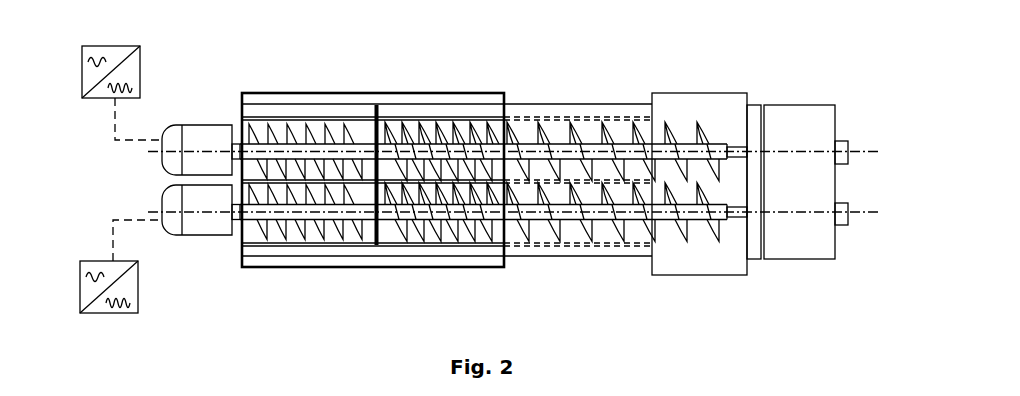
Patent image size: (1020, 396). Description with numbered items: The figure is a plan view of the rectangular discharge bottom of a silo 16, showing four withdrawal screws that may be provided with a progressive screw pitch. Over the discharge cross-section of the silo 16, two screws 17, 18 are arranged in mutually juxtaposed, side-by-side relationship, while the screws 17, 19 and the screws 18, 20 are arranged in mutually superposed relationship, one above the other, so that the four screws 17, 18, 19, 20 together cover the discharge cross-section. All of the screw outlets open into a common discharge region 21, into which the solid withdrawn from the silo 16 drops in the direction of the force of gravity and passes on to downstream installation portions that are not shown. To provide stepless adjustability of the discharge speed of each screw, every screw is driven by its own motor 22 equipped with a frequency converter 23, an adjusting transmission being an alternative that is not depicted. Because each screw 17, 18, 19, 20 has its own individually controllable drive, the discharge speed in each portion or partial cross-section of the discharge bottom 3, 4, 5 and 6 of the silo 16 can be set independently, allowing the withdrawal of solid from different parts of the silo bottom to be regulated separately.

The partial cross-section of the discharge bottom 3 is at (481, 234).
The partial cross-section of the discharge bottom 4 is at (447, 128).
The partial cross-section of the discharge bottom 5 is at (305, 236).
The partial cross-section of the discharge bottom 6 is at (296, 127).
The silo 16 is at (500, 91).
The screw 17 is at (438, 128).
The screw 18 is at (455, 234).
The screw 19 is at (346, 127).
The screw 20 is at (360, 234).
The discharge region 21 is at (700, 264).
The motor 22 is at (190, 140).
The frequency converter 23 is at (118, 56).